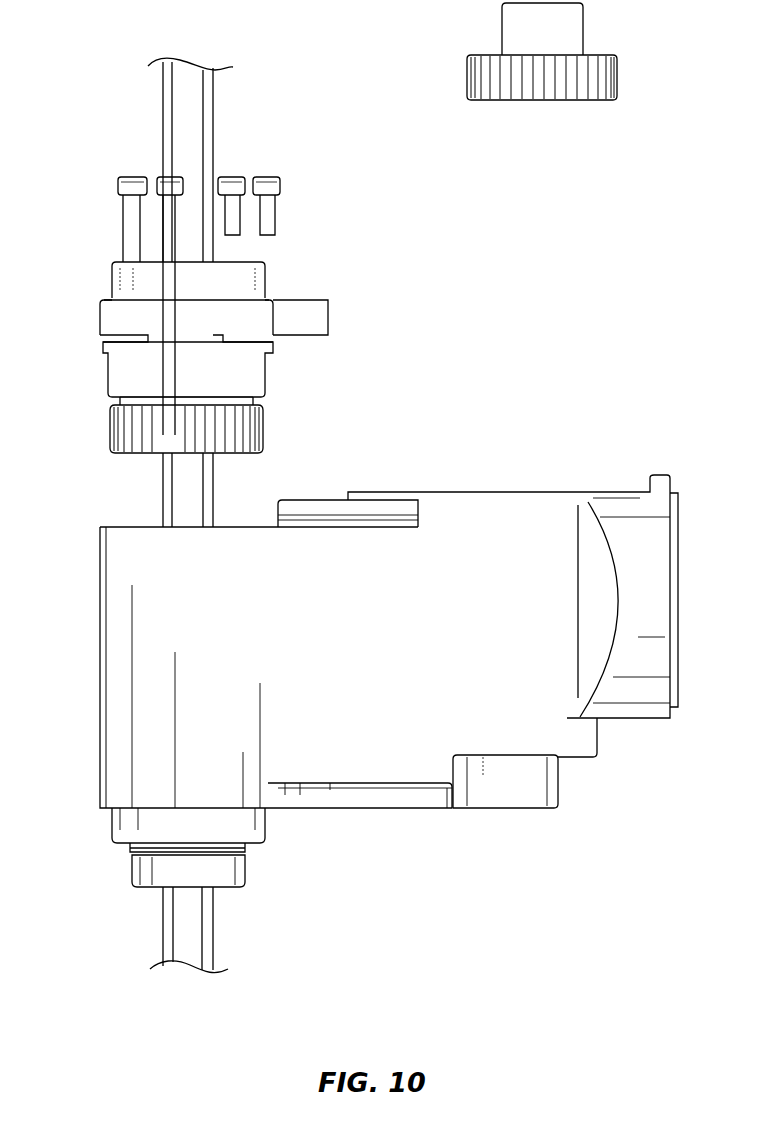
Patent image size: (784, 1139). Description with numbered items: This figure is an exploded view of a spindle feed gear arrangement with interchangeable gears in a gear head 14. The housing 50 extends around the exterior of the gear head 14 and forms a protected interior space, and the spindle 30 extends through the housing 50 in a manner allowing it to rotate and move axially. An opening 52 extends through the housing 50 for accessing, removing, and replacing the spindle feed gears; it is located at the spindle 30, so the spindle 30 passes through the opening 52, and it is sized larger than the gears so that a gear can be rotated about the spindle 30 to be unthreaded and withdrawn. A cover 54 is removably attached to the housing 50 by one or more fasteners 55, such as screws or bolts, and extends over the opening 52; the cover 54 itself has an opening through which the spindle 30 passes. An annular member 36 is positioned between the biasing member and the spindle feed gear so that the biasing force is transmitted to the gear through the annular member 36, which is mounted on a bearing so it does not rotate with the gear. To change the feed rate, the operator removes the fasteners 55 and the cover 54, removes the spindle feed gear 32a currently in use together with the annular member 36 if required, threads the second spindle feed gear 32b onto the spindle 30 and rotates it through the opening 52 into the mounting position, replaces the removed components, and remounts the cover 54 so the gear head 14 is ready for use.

The gear head 14 is at (532, 396).
The spindle 30 is at (203, 110).
The spindle feed gear 32a is at (252, 432).
The second spindle feed gear 32b is at (578, 80).
The annular member 36 is at (127, 372).
The housing 50 is at (132, 665).
The opening 52 is at (127, 525).
The cover 54 is at (132, 322).
The fasteners 55 is at (260, 183).